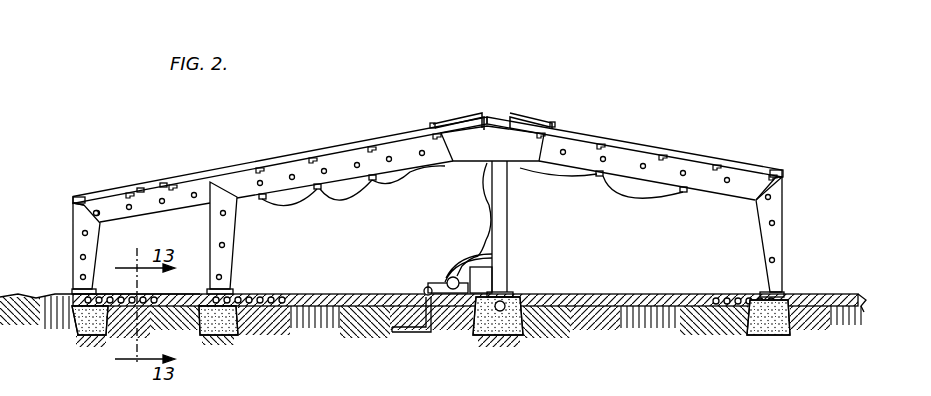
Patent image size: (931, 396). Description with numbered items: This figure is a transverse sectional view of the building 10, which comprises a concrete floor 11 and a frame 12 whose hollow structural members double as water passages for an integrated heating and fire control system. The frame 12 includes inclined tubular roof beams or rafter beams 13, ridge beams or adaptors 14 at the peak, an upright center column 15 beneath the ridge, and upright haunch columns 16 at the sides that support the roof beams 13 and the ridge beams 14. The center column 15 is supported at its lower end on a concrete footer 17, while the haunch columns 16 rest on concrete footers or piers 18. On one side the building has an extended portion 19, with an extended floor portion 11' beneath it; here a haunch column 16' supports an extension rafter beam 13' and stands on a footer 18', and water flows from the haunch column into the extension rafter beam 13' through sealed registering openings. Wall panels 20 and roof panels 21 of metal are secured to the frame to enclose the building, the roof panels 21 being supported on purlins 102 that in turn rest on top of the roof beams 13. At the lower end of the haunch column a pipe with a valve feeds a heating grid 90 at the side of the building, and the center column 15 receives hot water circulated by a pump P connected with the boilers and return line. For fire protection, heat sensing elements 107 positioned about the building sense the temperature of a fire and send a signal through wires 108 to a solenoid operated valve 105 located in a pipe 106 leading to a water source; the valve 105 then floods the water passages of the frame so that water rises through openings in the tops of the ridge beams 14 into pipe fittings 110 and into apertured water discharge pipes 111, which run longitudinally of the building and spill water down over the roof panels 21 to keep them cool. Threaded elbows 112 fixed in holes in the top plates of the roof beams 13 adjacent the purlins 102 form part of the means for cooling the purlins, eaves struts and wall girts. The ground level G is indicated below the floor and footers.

The building 10 is at (428, 181).
The concrete floor 11 is at (465, 274).
The extended floor portion 11' is at (141, 284).
The frame 12 is at (790, 200).
The roof beams 13 is at (496, 149).
The extension rafter beams 13' is at (153, 177).
The ridge beams 14 is at (493, 140).
The center columns 15 is at (509, 240).
The haunch columns 16 is at (518, 237).
The haunch column 16' is at (58, 248).
The footers 17 is at (522, 296).
The footers 18 is at (496, 341).
The footer 18' is at (80, 343).
The extended portion 19 is at (84, 178).
The wall panels 20 is at (72, 200).
The roof panels 21 is at (240, 166).
The heating grid 90 is at (263, 296).
The purlins 102 is at (163, 187).
The solenoid operated valve 105 is at (426, 288).
The pipe 106 is at (418, 338).
The heat sensing elements 107 is at (312, 205).
The wires 108 is at (412, 170).
The pipe fittings 110 is at (465, 118).
The water discharge pipes 111 is at (433, 123).
The threaded elbow 112 is at (130, 195).
The pump P is at (455, 277).
The ground G is at (828, 296).